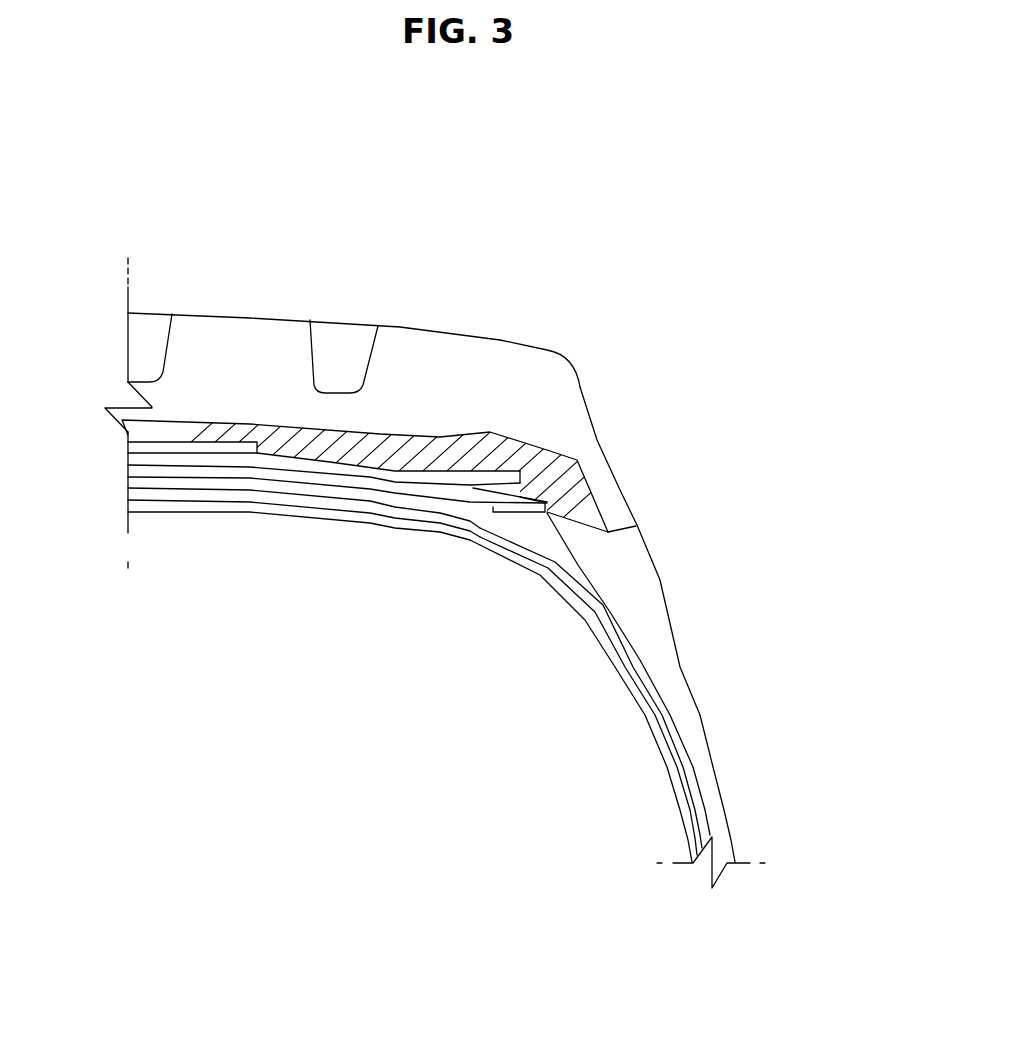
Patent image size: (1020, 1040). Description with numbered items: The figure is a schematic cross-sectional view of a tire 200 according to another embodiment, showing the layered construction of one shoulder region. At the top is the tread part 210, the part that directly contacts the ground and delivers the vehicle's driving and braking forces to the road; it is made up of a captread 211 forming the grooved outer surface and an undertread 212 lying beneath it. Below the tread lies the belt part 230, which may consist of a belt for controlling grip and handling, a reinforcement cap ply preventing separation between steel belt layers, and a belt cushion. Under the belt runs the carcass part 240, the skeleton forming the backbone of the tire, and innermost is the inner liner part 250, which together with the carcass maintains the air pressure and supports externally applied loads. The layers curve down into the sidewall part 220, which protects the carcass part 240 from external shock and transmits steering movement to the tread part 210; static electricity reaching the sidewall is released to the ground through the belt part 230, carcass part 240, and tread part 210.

The tire 200 is at (435, 138).
The tread part 210 is at (212, 258).
The captread 211 is at (416, 340).
The undertread 212 is at (403, 450).
The sidewall part 220 is at (762, 676).
The belt part 230 is at (120, 442).
The carcass part 240 is at (258, 498).
The inner liner part 250 is at (352, 517).